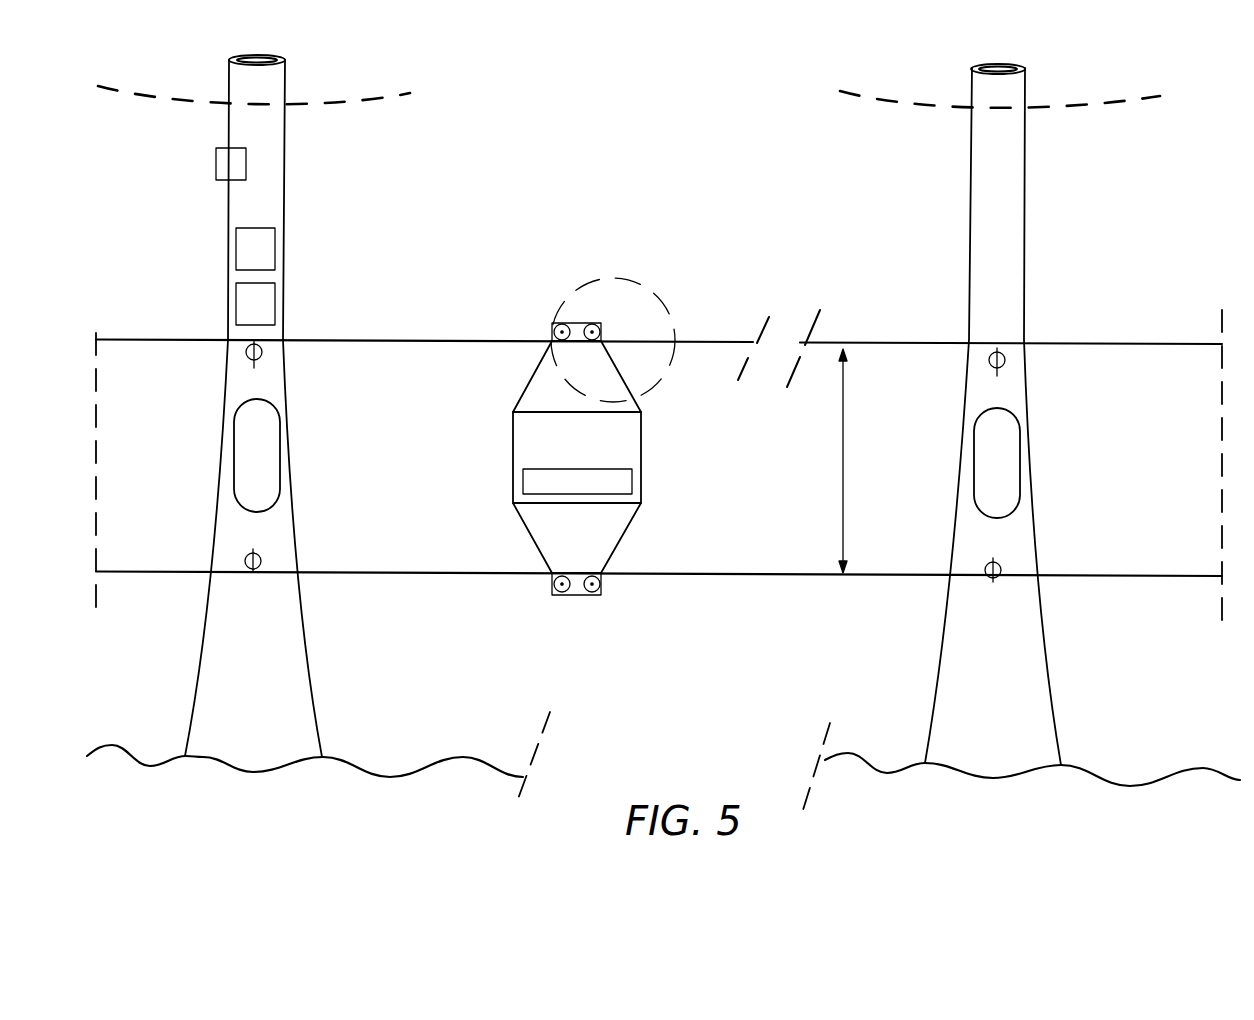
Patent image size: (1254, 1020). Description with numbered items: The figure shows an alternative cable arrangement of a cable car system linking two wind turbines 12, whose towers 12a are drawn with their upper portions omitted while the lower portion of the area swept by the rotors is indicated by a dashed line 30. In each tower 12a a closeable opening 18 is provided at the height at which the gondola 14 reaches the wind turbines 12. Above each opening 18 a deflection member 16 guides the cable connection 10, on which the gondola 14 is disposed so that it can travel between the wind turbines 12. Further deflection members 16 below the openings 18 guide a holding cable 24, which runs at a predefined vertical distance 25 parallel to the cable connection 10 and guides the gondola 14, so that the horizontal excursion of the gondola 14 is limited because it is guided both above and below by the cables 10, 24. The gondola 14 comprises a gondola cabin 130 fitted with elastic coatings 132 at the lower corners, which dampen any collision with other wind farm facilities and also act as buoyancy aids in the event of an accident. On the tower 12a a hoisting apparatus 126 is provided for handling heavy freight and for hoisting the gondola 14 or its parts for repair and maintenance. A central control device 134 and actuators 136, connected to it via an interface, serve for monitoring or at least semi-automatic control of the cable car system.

The cable connection 10 is at (443, 340).
The wind turbine 12 is at (318, 178).
The tower 12a is at (284, 243).
The gondola 14 is at (570, 436).
The deflection member 16 is at (262, 350).
The closeable opening 18 is at (268, 480).
The holding cable 24 is at (441, 574).
The vertical distance 25 is at (858, 461).
The boundary line 30 is at (629, 90).
The hoisting apparatus 126 is at (216, 165).
The gondola cabin 130 is at (641, 445).
The elastic coating 132 is at (596, 493).
The central control device 134 is at (272, 268).
The actuator 136 is at (272, 323).